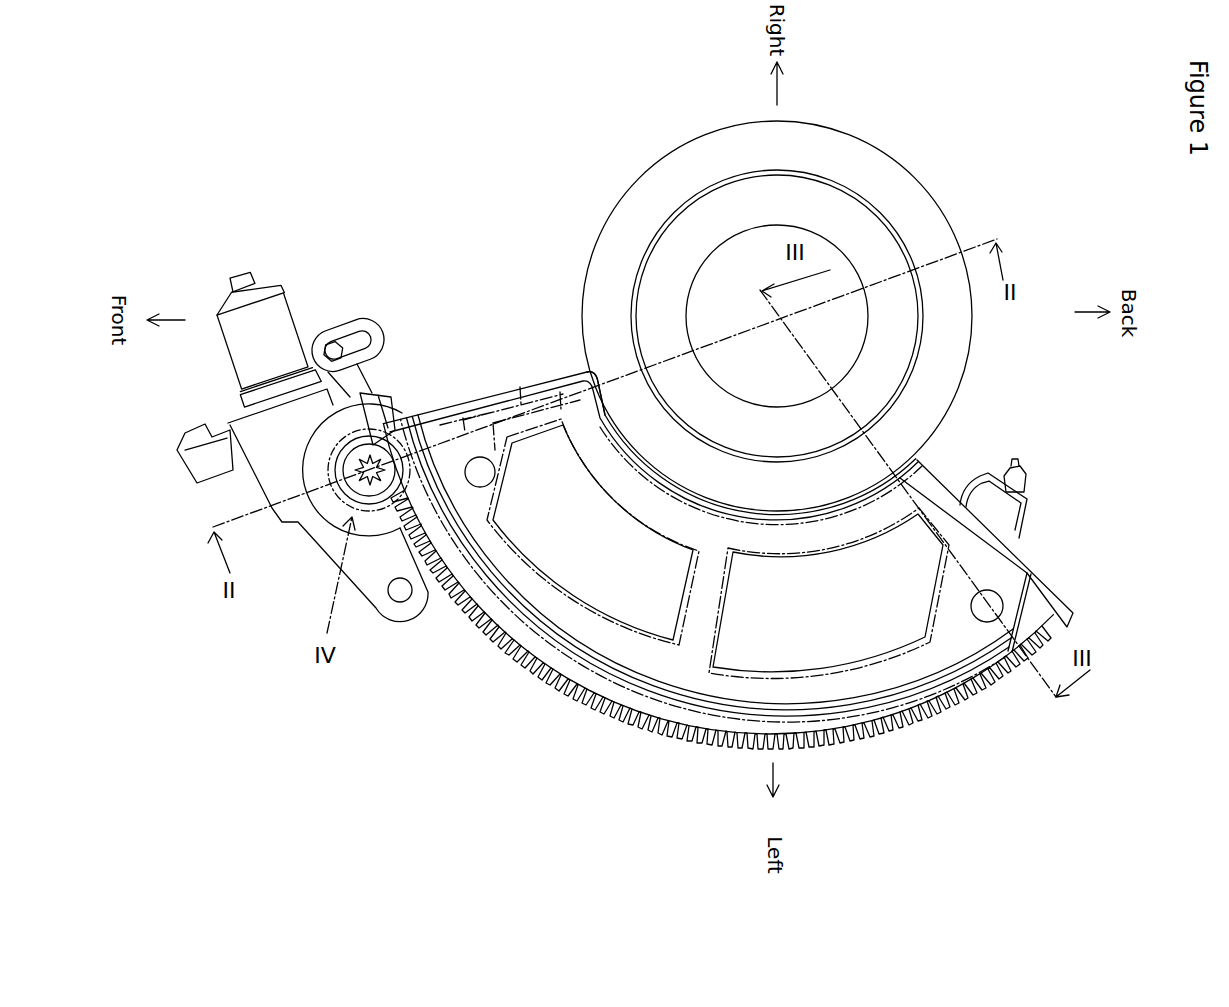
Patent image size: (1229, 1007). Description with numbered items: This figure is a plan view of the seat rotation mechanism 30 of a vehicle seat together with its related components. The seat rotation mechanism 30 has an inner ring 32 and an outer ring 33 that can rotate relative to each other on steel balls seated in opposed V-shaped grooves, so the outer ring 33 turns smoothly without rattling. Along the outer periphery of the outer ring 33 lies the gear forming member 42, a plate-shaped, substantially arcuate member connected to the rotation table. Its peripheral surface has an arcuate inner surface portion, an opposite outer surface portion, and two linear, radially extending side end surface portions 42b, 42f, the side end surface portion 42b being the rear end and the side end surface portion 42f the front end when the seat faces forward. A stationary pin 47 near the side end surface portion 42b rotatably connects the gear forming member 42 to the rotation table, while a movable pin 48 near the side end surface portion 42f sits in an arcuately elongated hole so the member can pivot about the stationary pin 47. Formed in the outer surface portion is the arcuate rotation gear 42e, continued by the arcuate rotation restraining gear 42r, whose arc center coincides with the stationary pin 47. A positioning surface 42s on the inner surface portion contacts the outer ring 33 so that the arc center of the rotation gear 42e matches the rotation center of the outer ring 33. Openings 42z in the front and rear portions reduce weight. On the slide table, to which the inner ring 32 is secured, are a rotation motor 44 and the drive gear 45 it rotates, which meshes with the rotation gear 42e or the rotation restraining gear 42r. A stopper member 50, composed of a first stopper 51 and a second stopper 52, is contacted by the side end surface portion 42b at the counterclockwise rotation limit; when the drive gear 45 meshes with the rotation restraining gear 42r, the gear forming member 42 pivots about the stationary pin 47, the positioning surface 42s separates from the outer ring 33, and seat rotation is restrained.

The seat rotation mechanism 30 is at (869, 124).
The inner ring 32 is at (695, 226).
The outer ring 33 is at (887, 178).
The gear forming member 42 is at (770, 536).
The openings 42z is at (558, 585).
The arcuate rotation gear 42e is at (617, 708).
The side end surface portion 42f is at (483, 403).
The positioning surface 42s is at (590, 378).
The arcuate rotation restraining gear 42r is at (378, 422).
The side end surface portion 42b is at (1050, 558).
The rotation motor 44 is at (323, 453).
The drive gear 45 is at (370, 455).
The stationary pin 47 is at (986, 612).
The movable pin 48 is at (478, 475).
The stopper member 50 is at (1043, 466).
The first stopper 51 is at (1002, 470).
The second stopper 52 is at (1022, 522).